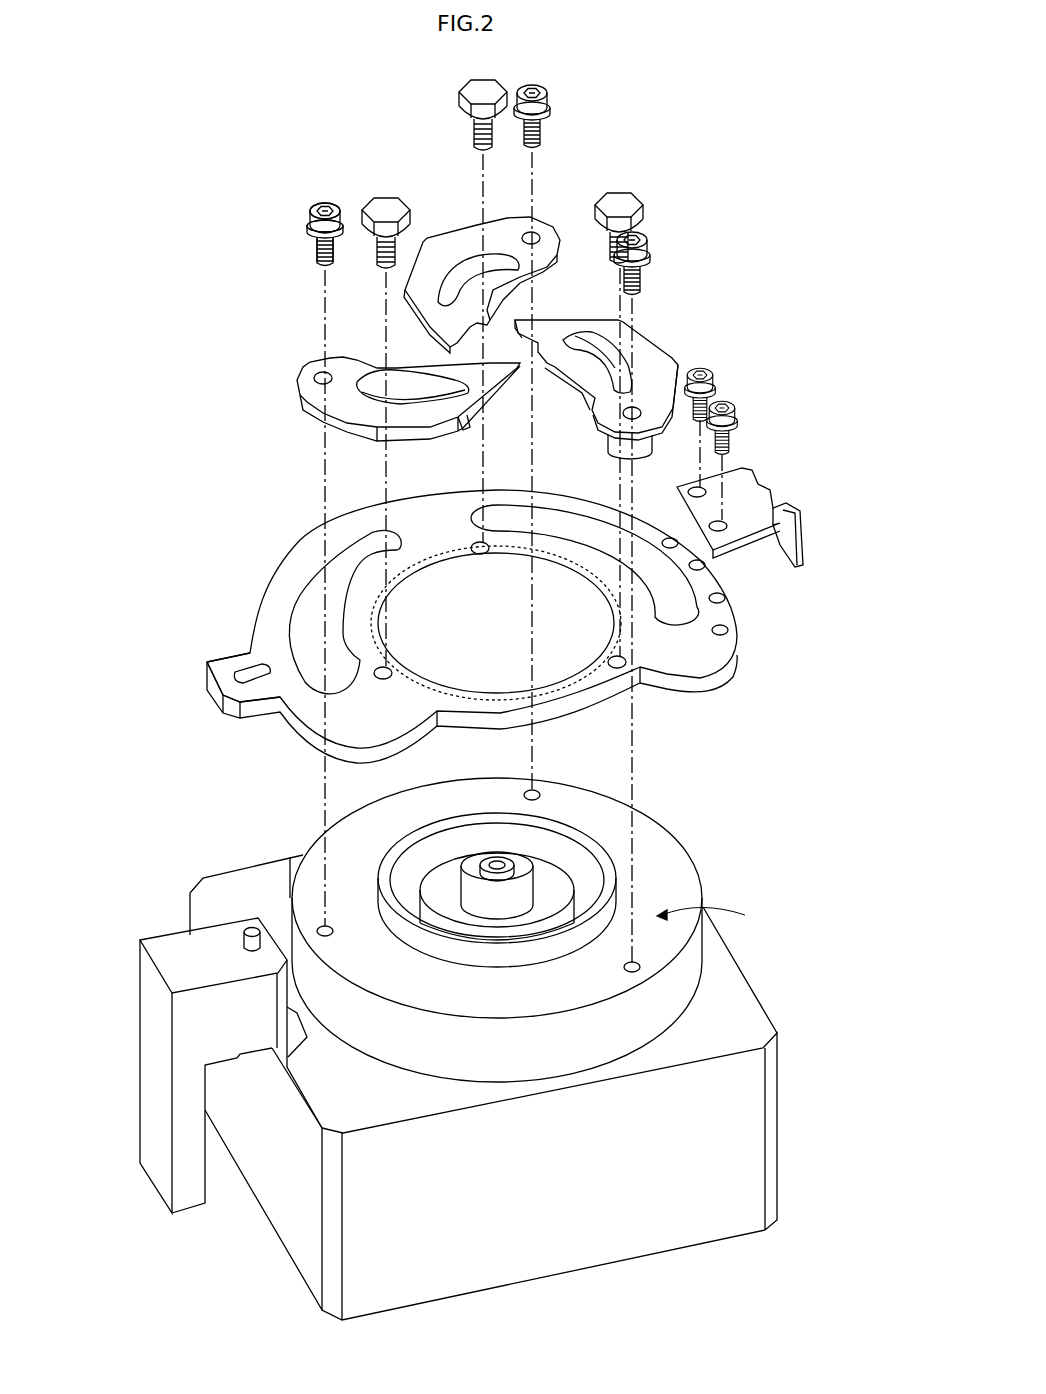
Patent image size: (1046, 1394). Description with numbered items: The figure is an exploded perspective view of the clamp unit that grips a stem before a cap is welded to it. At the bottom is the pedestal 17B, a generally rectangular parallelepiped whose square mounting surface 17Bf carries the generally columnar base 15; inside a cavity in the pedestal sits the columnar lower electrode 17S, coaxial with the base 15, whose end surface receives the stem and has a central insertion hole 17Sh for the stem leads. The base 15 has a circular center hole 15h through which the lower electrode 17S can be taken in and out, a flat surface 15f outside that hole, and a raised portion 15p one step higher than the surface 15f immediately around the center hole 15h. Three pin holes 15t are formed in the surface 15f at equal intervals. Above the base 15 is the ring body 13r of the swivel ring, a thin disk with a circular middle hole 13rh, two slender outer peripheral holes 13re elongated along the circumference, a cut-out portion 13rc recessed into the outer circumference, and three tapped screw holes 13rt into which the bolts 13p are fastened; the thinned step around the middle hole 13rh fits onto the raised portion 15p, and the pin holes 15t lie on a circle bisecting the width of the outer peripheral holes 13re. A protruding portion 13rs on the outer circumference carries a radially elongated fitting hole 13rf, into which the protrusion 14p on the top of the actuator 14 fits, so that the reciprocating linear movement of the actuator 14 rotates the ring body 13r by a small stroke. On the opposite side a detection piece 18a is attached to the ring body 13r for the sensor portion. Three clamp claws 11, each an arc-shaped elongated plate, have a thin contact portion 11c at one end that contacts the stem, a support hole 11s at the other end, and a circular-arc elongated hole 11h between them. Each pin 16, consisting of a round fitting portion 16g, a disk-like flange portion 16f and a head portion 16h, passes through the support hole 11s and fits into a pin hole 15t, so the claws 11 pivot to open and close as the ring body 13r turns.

The clamp claw 11 is at (446, 233).
The support hole 11s is at (533, 236).
The elongated hole 11h is at (587, 343).
The contact portion 11c is at (487, 327).
The bolt 13p is at (474, 90).
The ring body 13r is at (460, 649).
The outer peripheral hole 13re is at (308, 605).
The protruding portion 13rs is at (262, 652).
The fitting hole 13rf is at (240, 675).
The screw hole 13rt is at (612, 657).
The middle hole 13rh is at (562, 657).
The cut-out portion 13rc is at (605, 722).
The actuator 14 is at (202, 1020).
The protrusion 14p is at (250, 928).
The base 15 is at (516, 917).
The center hole 15h is at (577, 866).
The raised portion 15p is at (612, 878).
The surface 15f is at (721, 910).
The pin hole 15t is at (541, 794).
The pin 16 is at (540, 125).
The head portion 16h is at (311, 211).
The flange portion 16f is at (309, 228).
The fitting portion 16g is at (318, 256).
The pedestal 17B is at (516, 1087).
The mounting surface 17Bf is at (720, 1027).
The lower electrode 17S is at (440, 836).
The insertion hole 17Sh is at (493, 858).
The detection piece 18a is at (800, 515).